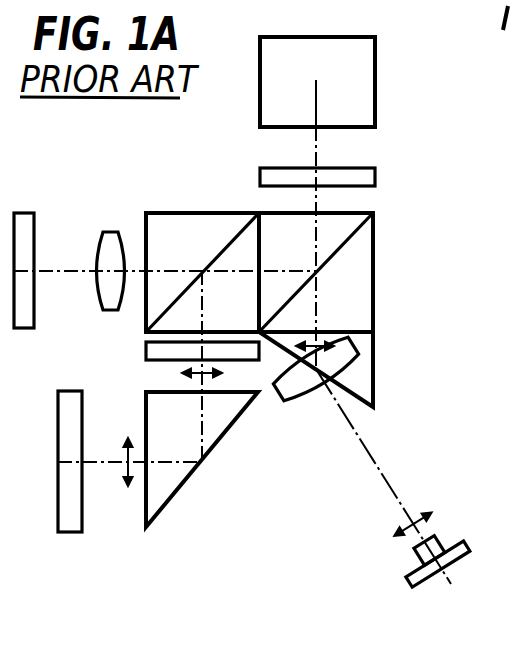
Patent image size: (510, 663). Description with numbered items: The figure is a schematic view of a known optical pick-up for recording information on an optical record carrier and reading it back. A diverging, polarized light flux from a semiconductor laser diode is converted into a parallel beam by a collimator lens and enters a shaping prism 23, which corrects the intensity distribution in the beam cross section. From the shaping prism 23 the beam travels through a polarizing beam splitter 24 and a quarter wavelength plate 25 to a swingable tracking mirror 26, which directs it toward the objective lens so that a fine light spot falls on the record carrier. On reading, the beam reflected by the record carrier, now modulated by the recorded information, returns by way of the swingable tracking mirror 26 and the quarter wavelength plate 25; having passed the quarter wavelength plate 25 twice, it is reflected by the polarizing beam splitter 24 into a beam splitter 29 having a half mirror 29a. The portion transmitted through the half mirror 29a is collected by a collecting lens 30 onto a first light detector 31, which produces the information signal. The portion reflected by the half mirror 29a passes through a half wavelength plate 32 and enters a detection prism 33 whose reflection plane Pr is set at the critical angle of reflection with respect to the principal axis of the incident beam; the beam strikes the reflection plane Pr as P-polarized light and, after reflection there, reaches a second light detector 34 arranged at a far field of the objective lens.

The shaping prism 23 is at (362, 364).
The polarizing beam splitter 24 is at (360, 271).
The quarter wavelength plate 25 is at (366, 173).
The swingable tracking mirror 26 is at (362, 80).
The beam splitter 29 is at (168, 221).
The half mirror 29a is at (240, 222).
The collecting lens 30 is at (108, 228).
The first light detector 31 is at (26, 216).
The half-wave plate 32 is at (147, 352).
The detection prism 33 is at (219, 416).
The second light detector 34 is at (72, 533).
The reflection plane Pr is at (172, 482).